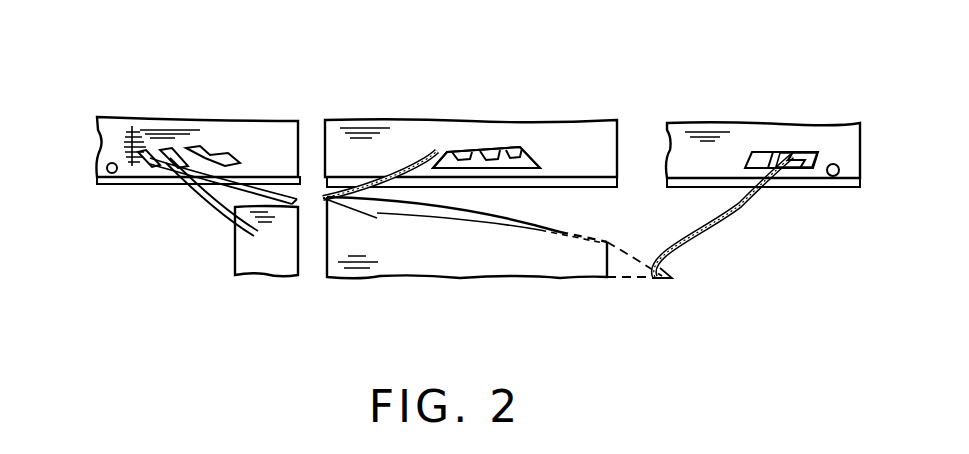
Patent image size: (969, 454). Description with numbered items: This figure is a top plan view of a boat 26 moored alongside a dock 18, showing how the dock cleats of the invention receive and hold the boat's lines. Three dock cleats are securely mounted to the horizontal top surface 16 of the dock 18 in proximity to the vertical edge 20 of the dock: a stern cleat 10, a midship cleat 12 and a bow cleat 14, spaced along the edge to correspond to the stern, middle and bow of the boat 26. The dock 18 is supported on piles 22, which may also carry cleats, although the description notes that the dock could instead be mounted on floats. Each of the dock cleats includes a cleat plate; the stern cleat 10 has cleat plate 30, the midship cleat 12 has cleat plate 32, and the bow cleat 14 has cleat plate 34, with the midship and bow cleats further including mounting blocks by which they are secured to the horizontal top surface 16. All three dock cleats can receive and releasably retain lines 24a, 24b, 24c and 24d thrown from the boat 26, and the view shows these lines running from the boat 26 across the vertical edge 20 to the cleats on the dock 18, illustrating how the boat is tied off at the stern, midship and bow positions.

The stern cleat 10 is at (199, 149).
The midship cleat 12 is at (493, 141).
The bow cleat 14 is at (756, 149).
The horizontal top surface 16 is at (273, 138).
The dock 18 is at (194, 116).
The vertical edge 20 is at (133, 185).
The piles 22 is at (107, 165).
The line 24a is at (300, 160).
The line 24b is at (390, 178).
The line 24c is at (212, 215).
The line 24d is at (718, 227).
The boat 26 is at (445, 265).
The cleat plate 30 is at (137, 155).
The cleat plate 32 is at (458, 148).
The cleat plate 34 is at (790, 152).